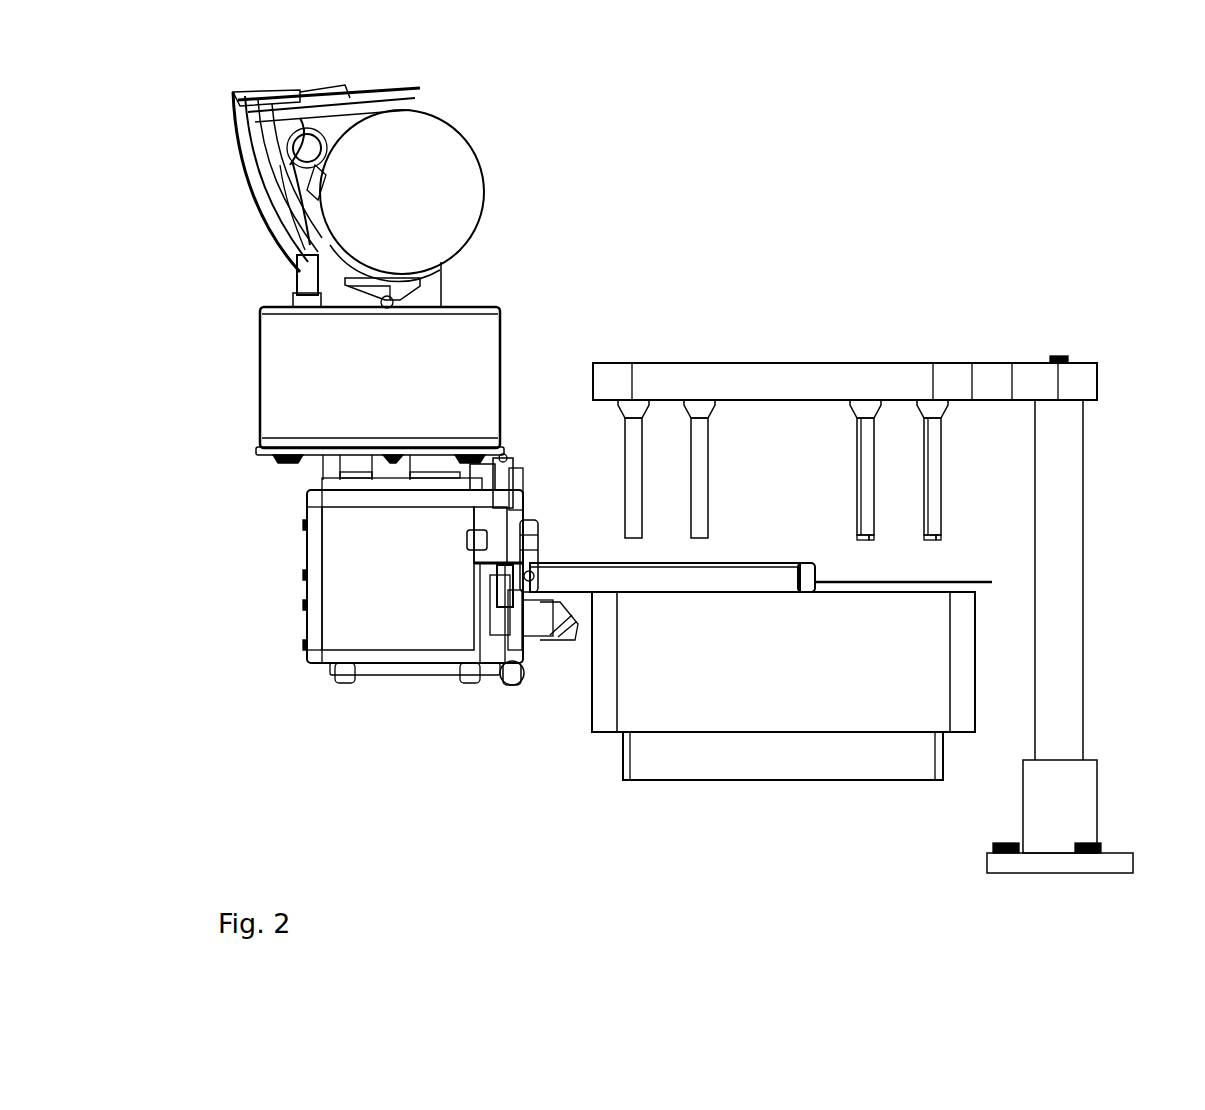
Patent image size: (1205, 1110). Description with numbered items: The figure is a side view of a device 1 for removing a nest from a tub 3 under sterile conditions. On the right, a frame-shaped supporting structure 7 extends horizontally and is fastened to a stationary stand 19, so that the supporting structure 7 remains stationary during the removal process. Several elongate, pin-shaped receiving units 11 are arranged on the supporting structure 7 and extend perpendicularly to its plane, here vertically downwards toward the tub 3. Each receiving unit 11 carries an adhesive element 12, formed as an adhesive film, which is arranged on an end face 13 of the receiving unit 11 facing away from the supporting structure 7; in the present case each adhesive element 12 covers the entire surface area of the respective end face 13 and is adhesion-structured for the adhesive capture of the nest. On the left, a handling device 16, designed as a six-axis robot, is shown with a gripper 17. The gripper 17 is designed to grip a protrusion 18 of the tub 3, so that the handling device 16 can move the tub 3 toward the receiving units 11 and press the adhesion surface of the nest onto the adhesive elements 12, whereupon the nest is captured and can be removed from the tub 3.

The device 1 is at (878, 515).
The tub 3 is at (672, 692).
The supporting structure 7 is at (788, 380).
The receiving units 11 is at (862, 483).
The adhesive element 12 is at (871, 540).
The end face 13 is at (863, 540).
The handling device 16 is at (493, 158).
The gripper 17 is at (725, 580).
The protrusion 18 is at (857, 583).
The stationary stand 19 is at (1057, 580).